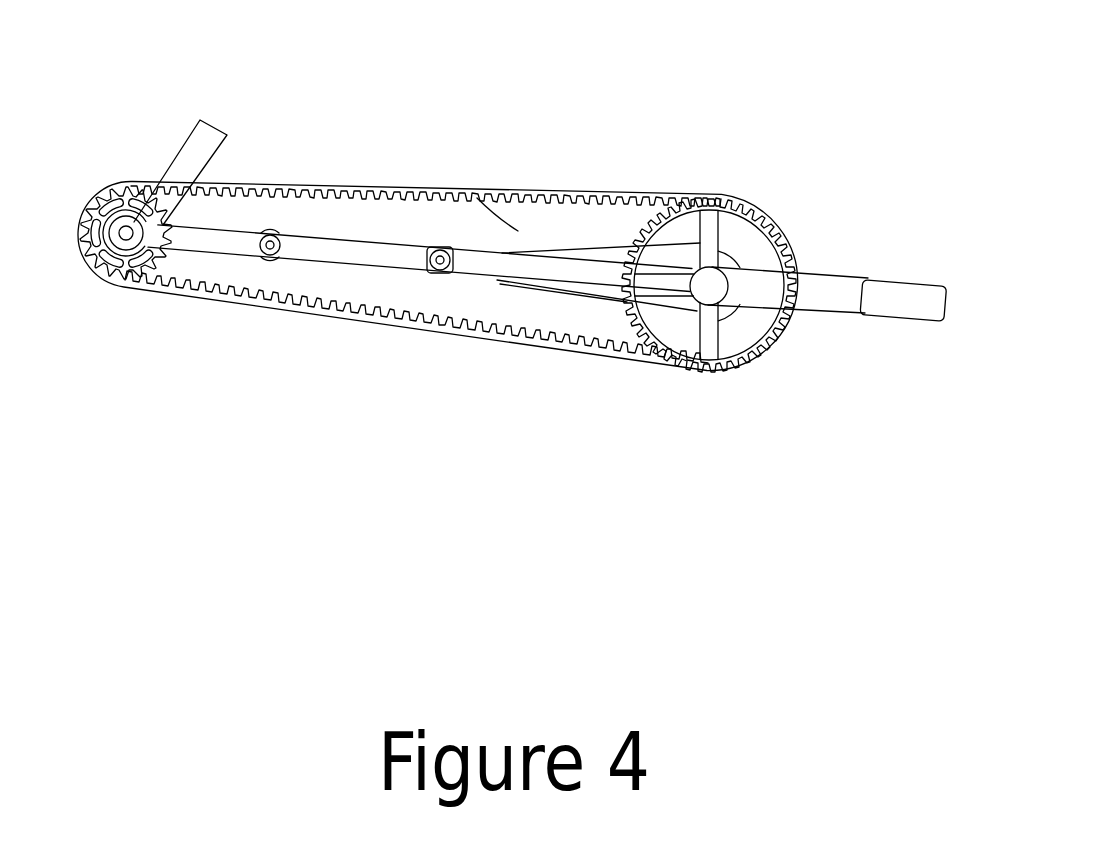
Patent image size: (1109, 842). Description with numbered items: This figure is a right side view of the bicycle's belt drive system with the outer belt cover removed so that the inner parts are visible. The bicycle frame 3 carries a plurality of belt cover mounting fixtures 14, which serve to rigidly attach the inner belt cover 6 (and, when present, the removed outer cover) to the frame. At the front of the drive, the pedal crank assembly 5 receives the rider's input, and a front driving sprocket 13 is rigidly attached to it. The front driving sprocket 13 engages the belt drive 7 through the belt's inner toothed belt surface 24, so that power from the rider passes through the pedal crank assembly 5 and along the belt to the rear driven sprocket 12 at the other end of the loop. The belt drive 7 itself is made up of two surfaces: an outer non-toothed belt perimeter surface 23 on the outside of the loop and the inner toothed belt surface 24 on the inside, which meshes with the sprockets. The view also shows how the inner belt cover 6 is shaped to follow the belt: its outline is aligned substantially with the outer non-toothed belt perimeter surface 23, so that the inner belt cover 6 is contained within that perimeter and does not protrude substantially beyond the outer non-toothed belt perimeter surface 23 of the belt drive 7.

The bicycle frame 3 is at (355, 258).
The pedal crank assembly 5 is at (838, 298).
The inner belt cover 6 is at (563, 230).
The belt drive 7 is at (478, 335).
The rear driven sprocket 12 is at (160, 267).
The front driving sprocket 13 is at (756, 352).
The belt cover mounting fixtures 14 is at (437, 273).
The outer non-toothed belt perimeter surface 23 is at (317, 185).
The inner toothed belt surface 24 is at (518, 231).